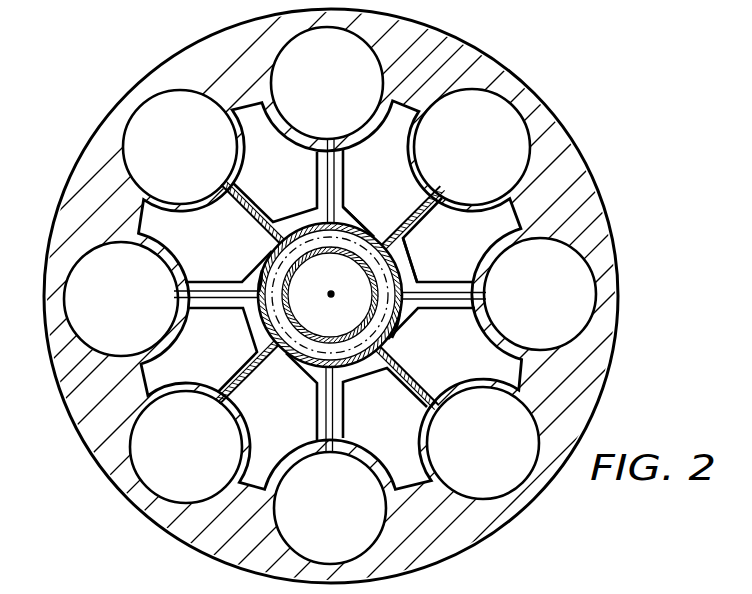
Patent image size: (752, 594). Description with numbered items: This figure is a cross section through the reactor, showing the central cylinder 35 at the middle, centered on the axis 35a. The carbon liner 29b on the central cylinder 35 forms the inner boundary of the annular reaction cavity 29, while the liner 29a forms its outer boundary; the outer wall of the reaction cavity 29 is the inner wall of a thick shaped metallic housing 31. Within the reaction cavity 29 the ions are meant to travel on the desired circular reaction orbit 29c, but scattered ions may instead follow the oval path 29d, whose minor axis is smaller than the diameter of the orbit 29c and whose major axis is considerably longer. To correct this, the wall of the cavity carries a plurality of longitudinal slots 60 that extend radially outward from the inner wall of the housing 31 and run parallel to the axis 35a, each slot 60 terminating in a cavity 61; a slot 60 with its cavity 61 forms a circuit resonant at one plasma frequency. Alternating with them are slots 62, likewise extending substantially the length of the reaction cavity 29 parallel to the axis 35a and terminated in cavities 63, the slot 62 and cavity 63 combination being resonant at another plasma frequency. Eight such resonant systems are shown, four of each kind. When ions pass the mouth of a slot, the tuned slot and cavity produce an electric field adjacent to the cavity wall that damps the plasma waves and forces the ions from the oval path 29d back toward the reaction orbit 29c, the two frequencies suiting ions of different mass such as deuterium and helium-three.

The housing 31 is at (527, 100).
The cavity 61 is at (303, 86).
The cavity 63 is at (159, 158).
The slot 60 is at (326, 176).
The slot 62 is at (233, 208).
The reaction cavity 29 is at (308, 367).
The liner 29a is at (404, 329).
The carbon liner 29b is at (411, 263).
The reaction orbit 29c is at (354, 240).
The oval path 29d is at (262, 268).
The central cylinder 35 is at (339, 322).
The axis 35a is at (330, 293).